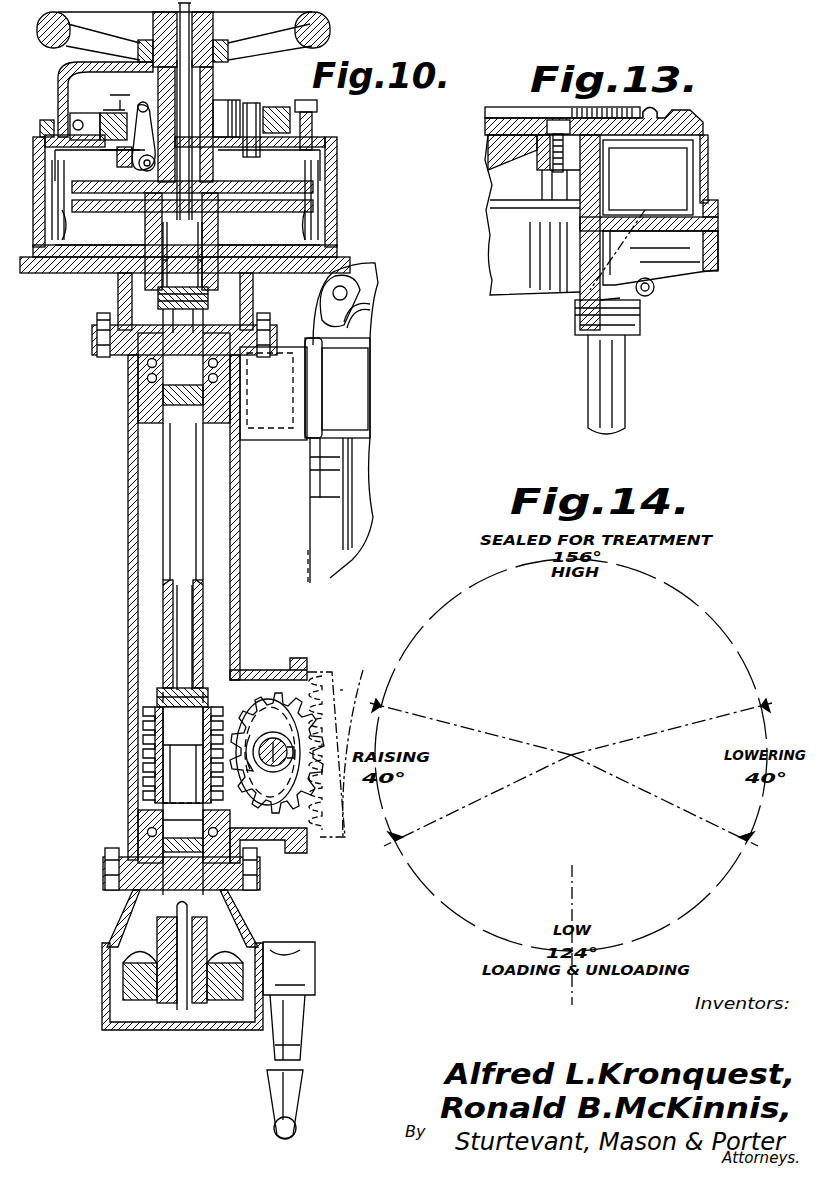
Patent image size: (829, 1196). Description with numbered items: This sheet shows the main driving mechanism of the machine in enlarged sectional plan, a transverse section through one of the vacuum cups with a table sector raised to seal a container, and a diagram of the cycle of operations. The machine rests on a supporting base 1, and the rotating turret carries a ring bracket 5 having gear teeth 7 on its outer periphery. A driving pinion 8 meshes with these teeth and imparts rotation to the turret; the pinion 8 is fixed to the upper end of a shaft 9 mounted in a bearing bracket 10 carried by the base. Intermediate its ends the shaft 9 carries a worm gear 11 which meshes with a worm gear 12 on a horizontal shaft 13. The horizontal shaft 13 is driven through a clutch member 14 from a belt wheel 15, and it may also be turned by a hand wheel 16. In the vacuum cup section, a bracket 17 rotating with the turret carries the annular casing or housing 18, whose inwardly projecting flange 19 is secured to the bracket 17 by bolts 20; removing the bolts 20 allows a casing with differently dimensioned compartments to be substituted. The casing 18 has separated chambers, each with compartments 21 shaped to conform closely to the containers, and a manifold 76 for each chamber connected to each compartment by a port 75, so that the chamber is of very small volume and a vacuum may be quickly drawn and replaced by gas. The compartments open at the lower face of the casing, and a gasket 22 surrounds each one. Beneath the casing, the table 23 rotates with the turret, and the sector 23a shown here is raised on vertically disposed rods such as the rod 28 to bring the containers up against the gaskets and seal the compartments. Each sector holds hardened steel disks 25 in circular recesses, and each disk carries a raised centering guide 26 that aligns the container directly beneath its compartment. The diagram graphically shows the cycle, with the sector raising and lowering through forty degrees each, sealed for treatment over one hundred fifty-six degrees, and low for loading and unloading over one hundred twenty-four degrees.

In FIG. 10, the supporting base 1 is at (355, 452).
In FIG. 10, the ring bracket 5 is at (345, 688).
In FIG. 10, the gear teeth 7 is at (333, 700).
In FIG. 10, the driving pinion 8 is at (308, 725).
In FIG. 10, the shaft 9 is at (273, 758).
In FIG. 10, the bearing bracket 10 is at (305, 845).
In FIG. 10, the worm gear 11 is at (268, 712).
In FIG. 10, the worm gear 12 is at (150, 752).
In FIG. 10, the horizontal shaft 13 is at (168, 648).
In FIG. 10, the clutch member 14 is at (295, 190).
In FIG. 10, the belt wheel 15 is at (305, 203).
In FIG. 10, the hand wheel 16 is at (266, 20).
In FIG. 13, the bracket 17 is at (490, 160).
In FIG. 13, the casing or housing 18 is at (708, 155).
In FIG. 13, the inwardly projecting flange 19 is at (540, 125).
In FIG. 13, the bolts 20 is at (560, 125).
In FIG. 13, the compartments 21 is at (700, 183).
In FIG. 13, the gasket 22 is at (700, 217).
In FIG. 13, the table 23 is at (692, 299).
In FIG. 13, the table sector 23a is at (530, 290).
In FIG. 13, the hardened steel disks 25 is at (700, 262).
In FIG. 13, the raised centering guide 26 is at (620, 218).
In FIG. 13, the rod 28 is at (605, 392).
In FIG. 13, the port 75 is at (652, 148).
In FIG. 13, the manifold 76 is at (660, 112).